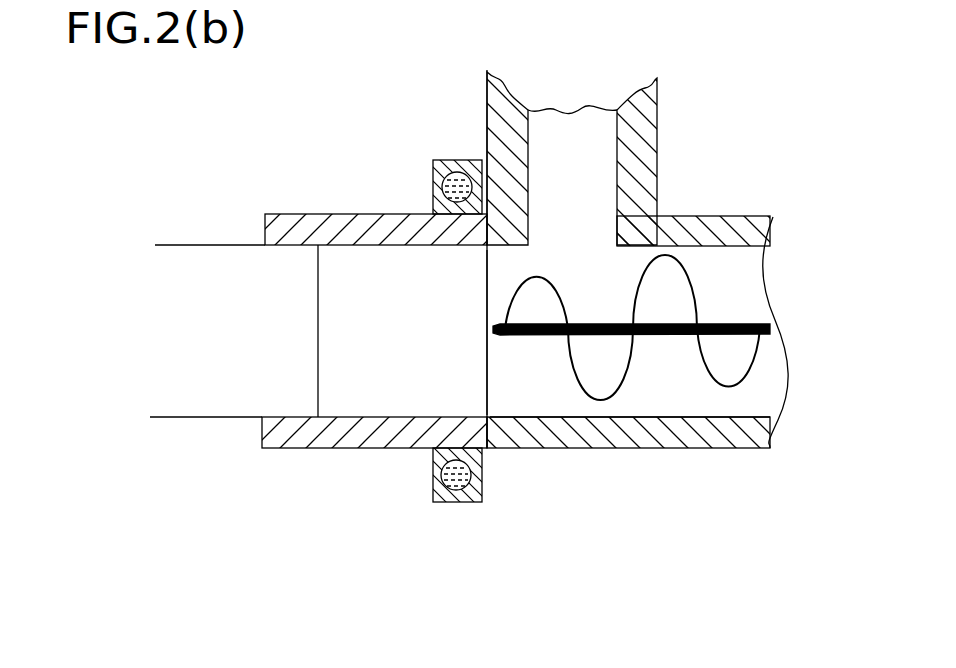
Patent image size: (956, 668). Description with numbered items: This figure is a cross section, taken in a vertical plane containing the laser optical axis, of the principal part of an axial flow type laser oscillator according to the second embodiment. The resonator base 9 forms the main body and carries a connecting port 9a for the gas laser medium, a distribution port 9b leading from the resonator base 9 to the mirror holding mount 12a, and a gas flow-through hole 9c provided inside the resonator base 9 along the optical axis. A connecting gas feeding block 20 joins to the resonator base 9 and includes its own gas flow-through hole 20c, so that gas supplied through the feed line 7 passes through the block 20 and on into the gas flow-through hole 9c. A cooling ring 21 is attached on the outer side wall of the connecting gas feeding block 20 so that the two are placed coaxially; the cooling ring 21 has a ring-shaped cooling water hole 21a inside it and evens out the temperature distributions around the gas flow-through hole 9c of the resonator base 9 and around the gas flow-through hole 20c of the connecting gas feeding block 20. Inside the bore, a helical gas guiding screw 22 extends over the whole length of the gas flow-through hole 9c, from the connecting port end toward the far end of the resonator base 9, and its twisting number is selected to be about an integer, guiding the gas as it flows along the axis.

The feed tube 7 is at (215, 268).
The connecting gas feeding block 20 is at (358, 214).
The gas flow-through hole 20c is at (380, 353).
The cooling ring 21 is at (445, 502).
The ring-shaped cooling water hole 21a is at (473, 502).
The mirror holding mount 12a is at (648, 132).
The resonator base 9 is at (695, 448).
The connecting port 9a is at (493, 355).
The distribution port 9b is at (597, 233).
The gas flow-through hole 9c is at (580, 403).
The helical gas guiding screw 22 is at (740, 375).